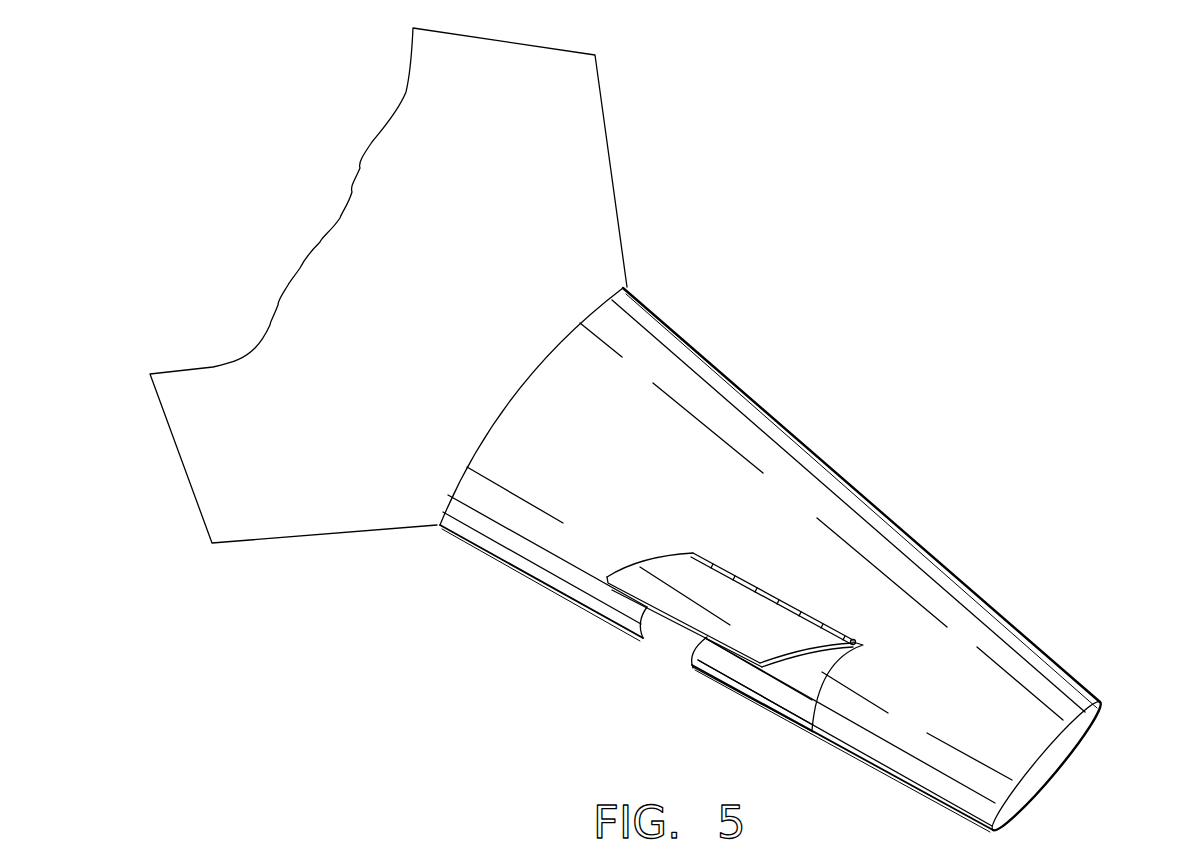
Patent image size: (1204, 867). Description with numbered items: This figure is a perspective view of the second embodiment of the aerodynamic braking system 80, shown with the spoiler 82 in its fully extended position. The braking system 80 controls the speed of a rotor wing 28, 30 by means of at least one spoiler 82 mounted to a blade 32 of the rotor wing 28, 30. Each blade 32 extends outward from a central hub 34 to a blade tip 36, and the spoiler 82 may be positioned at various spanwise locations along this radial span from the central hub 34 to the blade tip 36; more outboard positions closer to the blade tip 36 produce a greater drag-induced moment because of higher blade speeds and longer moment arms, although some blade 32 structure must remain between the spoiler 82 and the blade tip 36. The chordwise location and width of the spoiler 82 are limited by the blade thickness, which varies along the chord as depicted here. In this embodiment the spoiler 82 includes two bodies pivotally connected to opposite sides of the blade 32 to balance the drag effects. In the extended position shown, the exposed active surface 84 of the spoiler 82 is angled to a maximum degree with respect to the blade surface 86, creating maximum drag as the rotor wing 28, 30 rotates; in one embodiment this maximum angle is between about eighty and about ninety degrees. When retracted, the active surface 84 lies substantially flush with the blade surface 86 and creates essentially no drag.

The rotor wing 28 is at (813, 562).
The rotor wing 30 is at (813, 562).
The blade 32 is at (703, 358).
The central hub 34 is at (330, 535).
The blade tip 36 is at (1077, 734).
The aerodynamic braking system 80 is at (766, 679).
The spoiler 82 is at (758, 707).
The active surface 84 is at (725, 590).
The blade surface 86 is at (908, 733).